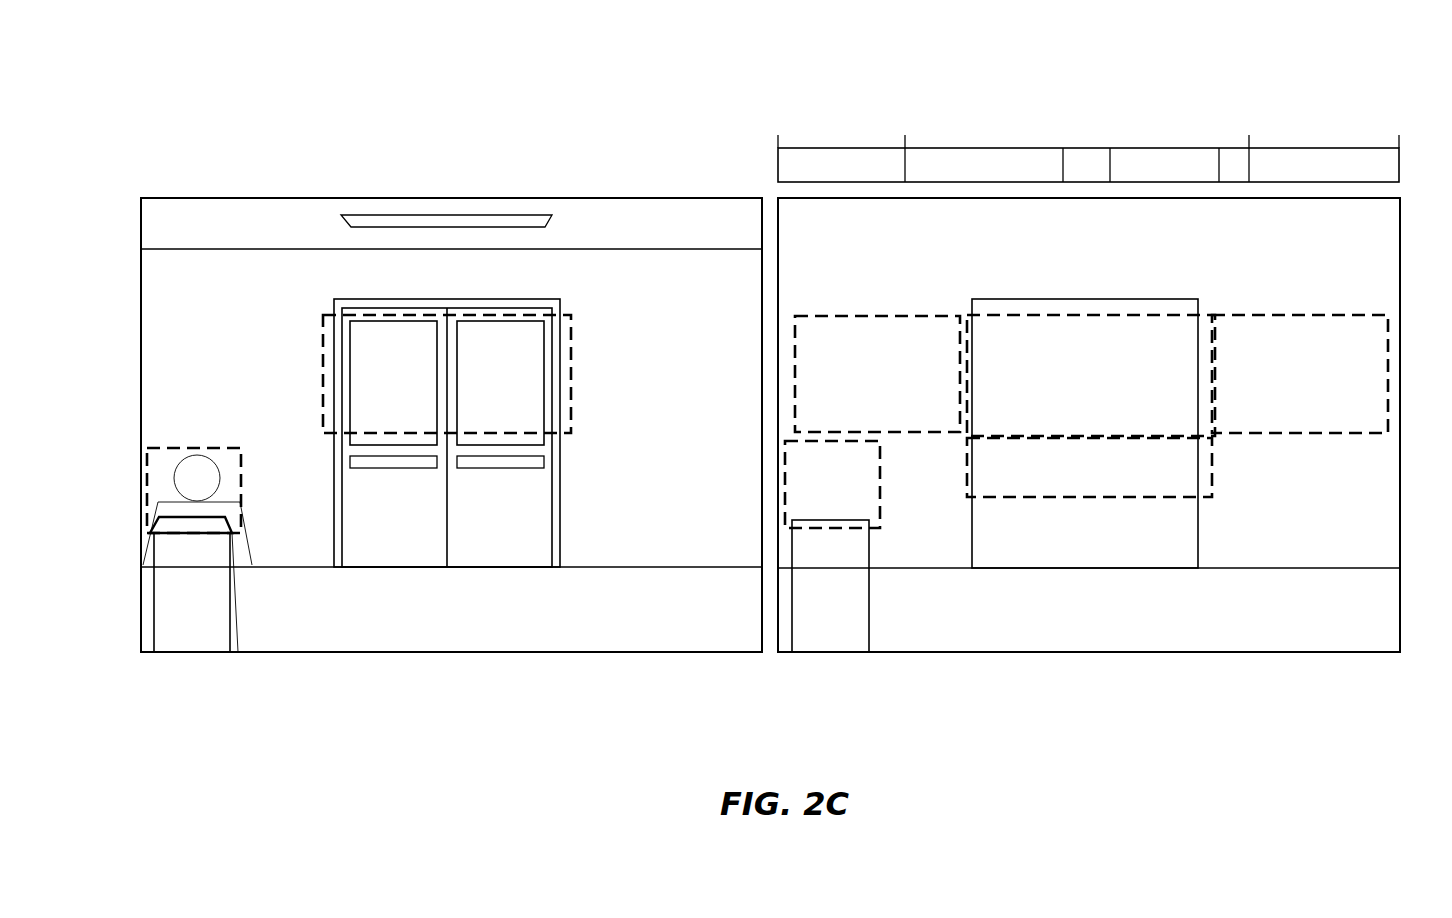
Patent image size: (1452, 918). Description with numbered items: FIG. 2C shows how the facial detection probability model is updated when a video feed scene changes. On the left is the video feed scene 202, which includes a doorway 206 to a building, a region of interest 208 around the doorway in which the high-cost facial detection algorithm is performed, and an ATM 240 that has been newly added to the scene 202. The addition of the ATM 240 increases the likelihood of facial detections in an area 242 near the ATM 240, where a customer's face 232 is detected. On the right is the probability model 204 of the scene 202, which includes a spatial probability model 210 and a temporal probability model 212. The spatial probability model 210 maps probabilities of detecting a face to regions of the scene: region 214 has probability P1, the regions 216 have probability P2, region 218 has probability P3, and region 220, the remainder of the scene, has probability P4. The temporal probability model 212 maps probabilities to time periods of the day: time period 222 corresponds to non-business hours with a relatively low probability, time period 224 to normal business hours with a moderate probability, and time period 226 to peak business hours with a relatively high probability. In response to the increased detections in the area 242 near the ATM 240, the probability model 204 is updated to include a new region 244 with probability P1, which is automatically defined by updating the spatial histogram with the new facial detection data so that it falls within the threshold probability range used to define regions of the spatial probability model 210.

The video feed scene 202 is at (357, 198).
The probability model 204 is at (1052, 101).
The doorway 206 is at (580, 480).
The region of interest 208 is at (323, 352).
The spatial probability model 210 is at (975, 653).
The temporal probability model 212 is at (778, 165).
The region 214 is at (1091, 375).
The region 216 is at (1091, 374).
The region 218 is at (1089, 467).
The region 220 is at (1085, 399).
The time period 222 is at (1084, 165).
The time period 224 is at (1073, 165).
The time period 226 is at (1085, 158).
The customer's face 232 is at (197, 460).
The ATM 240 is at (231, 583).
The area 242 is at (241, 487).
The region 244 is at (832, 484).